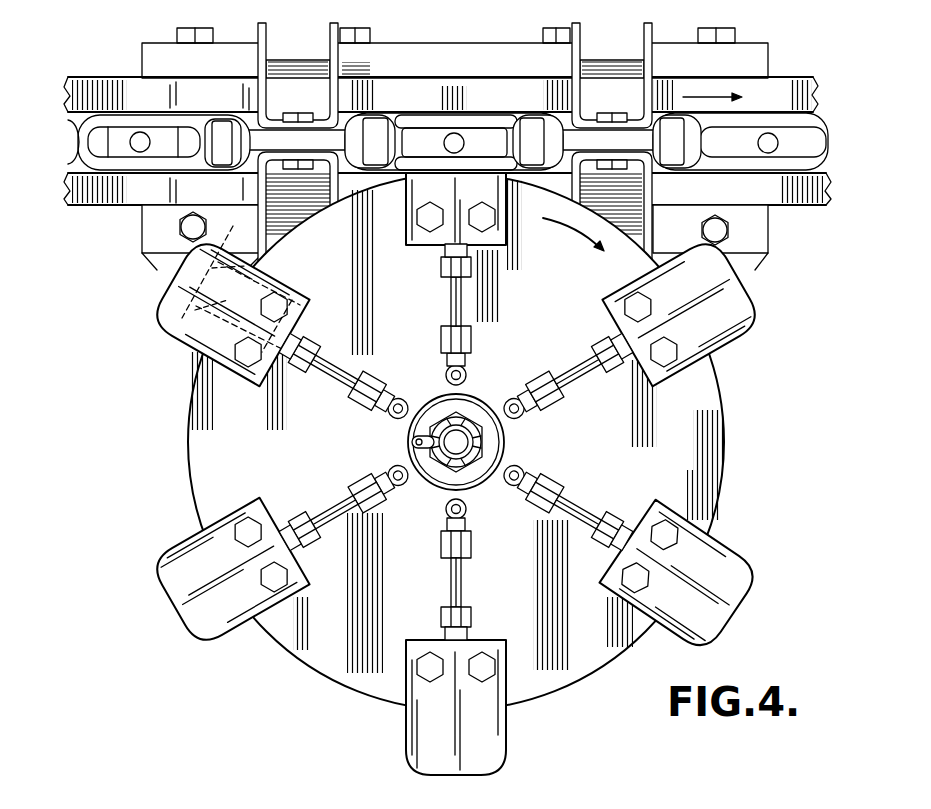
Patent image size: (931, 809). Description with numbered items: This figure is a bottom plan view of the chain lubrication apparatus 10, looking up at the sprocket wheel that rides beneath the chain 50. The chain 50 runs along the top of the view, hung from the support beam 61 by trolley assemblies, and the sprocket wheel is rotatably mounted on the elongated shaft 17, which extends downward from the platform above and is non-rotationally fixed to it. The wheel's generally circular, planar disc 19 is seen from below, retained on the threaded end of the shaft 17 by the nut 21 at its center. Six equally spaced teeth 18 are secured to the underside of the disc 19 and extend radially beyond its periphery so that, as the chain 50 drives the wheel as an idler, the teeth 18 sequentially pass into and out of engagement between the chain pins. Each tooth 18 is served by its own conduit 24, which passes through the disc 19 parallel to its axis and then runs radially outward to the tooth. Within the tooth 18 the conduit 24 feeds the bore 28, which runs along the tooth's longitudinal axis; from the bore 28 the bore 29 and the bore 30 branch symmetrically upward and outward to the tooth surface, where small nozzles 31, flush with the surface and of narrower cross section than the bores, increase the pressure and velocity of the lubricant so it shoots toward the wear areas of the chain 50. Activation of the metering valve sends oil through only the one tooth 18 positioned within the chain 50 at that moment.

The chain lubrication apparatus 10 is at (448, 474).
The elongated shaft 17 is at (458, 445).
The tooth 18 is at (503, 223).
The disc 19 is at (724, 437).
The nut 21 is at (488, 430).
The conduit 24 is at (465, 368).
The bore 28 is at (275, 290).
The bore 29 is at (195, 310).
The bore 30 is at (212, 268).
The nozzle 31 is at (234, 252).
The chain 50 is at (787, 115).
The support beam 61 is at (780, 80).